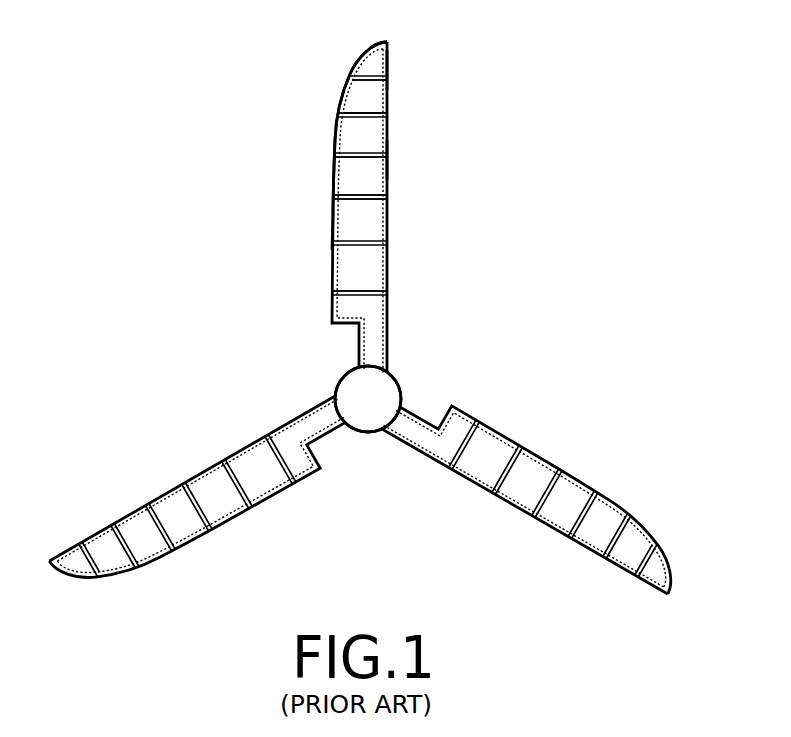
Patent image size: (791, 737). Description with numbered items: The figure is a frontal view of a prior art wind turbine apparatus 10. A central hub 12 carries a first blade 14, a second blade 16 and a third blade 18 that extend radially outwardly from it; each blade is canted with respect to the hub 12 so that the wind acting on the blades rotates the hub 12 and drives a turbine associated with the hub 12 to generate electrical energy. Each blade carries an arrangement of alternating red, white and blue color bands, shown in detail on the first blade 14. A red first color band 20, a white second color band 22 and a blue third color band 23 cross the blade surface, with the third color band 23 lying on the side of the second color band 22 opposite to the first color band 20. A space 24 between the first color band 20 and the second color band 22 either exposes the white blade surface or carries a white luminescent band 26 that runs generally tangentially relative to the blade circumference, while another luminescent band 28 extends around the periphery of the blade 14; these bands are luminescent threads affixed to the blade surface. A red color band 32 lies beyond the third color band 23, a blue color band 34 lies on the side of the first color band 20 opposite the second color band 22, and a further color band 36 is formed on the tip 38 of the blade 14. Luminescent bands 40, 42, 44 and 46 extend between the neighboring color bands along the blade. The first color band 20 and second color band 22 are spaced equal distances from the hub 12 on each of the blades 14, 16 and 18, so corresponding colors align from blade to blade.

The wind turbine apparatus 10 is at (476, 272).
The hub 12 is at (385, 390).
The first blade 14 is at (372, 268).
The second blade 16 is at (510, 490).
The third blade 18 is at (218, 510).
The first color band 20 is at (373, 135).
The second color band 22 is at (365, 183).
The third color band 23 is at (333, 212).
The space 24 is at (335, 155).
The luminescent band 26 is at (387, 157).
The luminescent band 28 is at (387, 68).
The color band 32 is at (345, 278).
The color band 34 is at (343, 97).
The color band 36 is at (362, 58).
The tip 38 is at (388, 42).
The luminescent band 40 is at (385, 200).
The luminescent band 42 is at (332, 230).
The luminescent band 44 is at (387, 115).
The luminescent band 46 is at (387, 80).